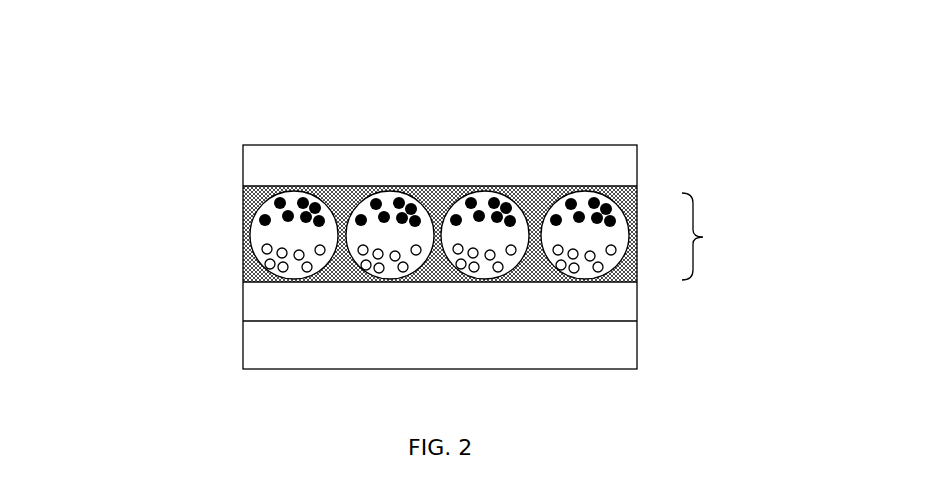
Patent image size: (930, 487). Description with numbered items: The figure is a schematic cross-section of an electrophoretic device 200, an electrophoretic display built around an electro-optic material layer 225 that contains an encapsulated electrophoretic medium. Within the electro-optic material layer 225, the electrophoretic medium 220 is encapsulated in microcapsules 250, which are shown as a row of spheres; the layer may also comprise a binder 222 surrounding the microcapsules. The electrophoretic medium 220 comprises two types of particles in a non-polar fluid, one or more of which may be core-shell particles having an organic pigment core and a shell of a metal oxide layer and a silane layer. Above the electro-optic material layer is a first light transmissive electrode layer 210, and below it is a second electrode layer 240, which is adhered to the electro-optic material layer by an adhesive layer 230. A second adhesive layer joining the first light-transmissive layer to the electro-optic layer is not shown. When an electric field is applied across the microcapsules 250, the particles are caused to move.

The electrophoretic device 200 is at (312, 87).
The first light transmissive electrode layer 210 is at (440, 171).
The electrophoretic medium 220 is at (252, 228).
The binder 222 is at (253, 272).
The electro-optic material layer 225 is at (734, 236).
The adhesive layer 230 is at (440, 306).
The second electrode layer 240 is at (440, 347).
The microcapsules 250 is at (523, 190).